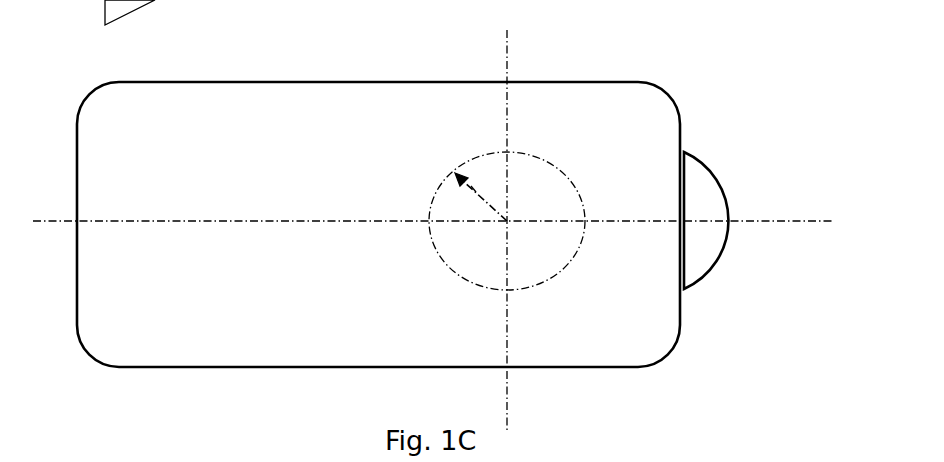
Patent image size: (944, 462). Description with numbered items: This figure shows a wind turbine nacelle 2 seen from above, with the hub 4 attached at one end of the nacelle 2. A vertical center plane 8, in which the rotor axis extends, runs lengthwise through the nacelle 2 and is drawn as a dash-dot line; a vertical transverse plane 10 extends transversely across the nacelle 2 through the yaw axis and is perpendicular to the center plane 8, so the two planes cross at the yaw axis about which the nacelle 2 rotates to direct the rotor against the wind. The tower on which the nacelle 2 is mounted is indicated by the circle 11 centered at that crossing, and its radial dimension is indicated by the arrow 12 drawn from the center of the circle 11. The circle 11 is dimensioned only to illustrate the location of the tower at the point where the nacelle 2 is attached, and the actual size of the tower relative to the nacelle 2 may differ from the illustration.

The nacelle 2 is at (404, 80).
The hub 4 is at (738, 193).
The vertical center plane 8 is at (816, 219).
The vertical transverse plane 10 is at (510, 50).
The circle 11 is at (557, 167).
The arrow 12 is at (473, 189).